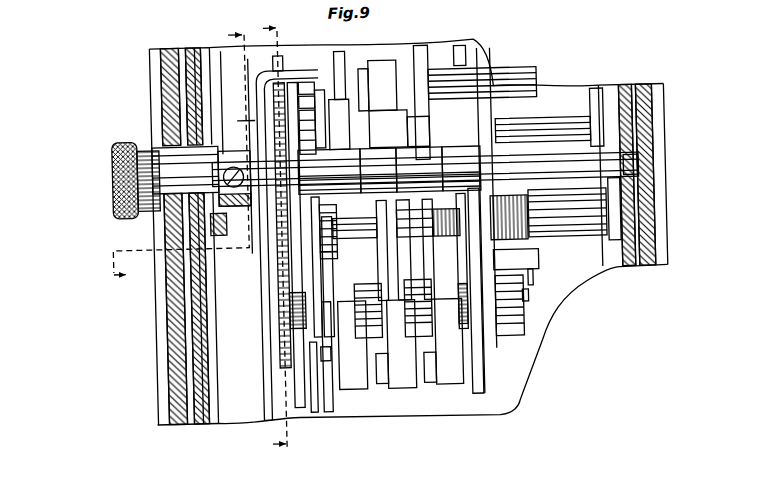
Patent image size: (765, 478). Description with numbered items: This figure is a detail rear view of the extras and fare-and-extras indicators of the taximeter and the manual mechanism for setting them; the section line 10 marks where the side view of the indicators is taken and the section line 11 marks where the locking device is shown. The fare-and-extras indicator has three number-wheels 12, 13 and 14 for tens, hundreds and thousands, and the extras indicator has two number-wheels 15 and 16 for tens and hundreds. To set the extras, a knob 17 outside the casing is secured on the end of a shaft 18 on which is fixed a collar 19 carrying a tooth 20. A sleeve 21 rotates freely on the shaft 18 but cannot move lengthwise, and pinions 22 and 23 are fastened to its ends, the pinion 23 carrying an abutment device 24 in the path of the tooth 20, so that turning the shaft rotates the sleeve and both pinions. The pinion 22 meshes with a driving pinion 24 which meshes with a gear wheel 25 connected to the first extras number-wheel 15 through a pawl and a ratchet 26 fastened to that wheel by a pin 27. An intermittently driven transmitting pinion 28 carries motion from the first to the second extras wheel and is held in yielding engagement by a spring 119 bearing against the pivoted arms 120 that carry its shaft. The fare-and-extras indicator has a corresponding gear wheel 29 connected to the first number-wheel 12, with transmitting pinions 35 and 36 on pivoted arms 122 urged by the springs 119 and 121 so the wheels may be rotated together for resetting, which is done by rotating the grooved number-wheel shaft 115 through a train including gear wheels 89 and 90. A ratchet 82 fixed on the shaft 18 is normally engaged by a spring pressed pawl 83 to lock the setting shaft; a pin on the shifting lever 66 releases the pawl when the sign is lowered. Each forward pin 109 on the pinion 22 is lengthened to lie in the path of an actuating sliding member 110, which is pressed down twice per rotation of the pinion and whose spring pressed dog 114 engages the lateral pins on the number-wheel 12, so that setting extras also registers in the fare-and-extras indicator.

The section line 10- 10 is at (280, 235).
The section line 11- 11 is at (177, 150).
The first fare-and-extras number-wheel 12 is at (355, 385).
The second fare-and-extras number-wheel 13 is at (401, 385).
The third fare-and-extras number-wheel 14 is at (447, 383).
The first extras number-wheel 15 is at (346, 66).
The second extras number-wheel 16 is at (389, 63).
The knob 17 is at (116, 196).
The shaft 18 is at (575, 209).
The collar 19 is at (493, 180).
The tooth 20 is at (461, 168).
The sleeve 21 is at (333, 214).
The pinion 22 is at (329, 172).
The pinion 23 is at (419, 169).
The driving pinion 24 is at (314, 113).
The gear wheel 25 is at (248, 80).
The ratchet 26 is at (310, 86).
The pin 27 is at (312, 100).
The transmitting pinion 28 is at (365, 124).
The gear wheel 29 is at (314, 408).
The transmitting pinion 35 is at (362, 332).
The transmitting pinion 36 is at (426, 320).
The shifting lever 66 is at (297, 68).
The ratchet 82 is at (212, 148).
The spring pressed pawl 83 is at (203, 238).
The gear wheel 89 is at (314, 148).
The gear wheel 90 is at (280, 362).
The forward pin 109 is at (296, 168).
The actuating sliding member 110 is at (318, 280).
The spring pressed dog 114 is at (326, 355).
The number-wheel shaft 115 is at (522, 305).
The spring 119 is at (285, 262).
The arm 120 is at (523, 80).
The spring 121 is at (528, 250).
The pivoted arm 122 is at (275, 305).